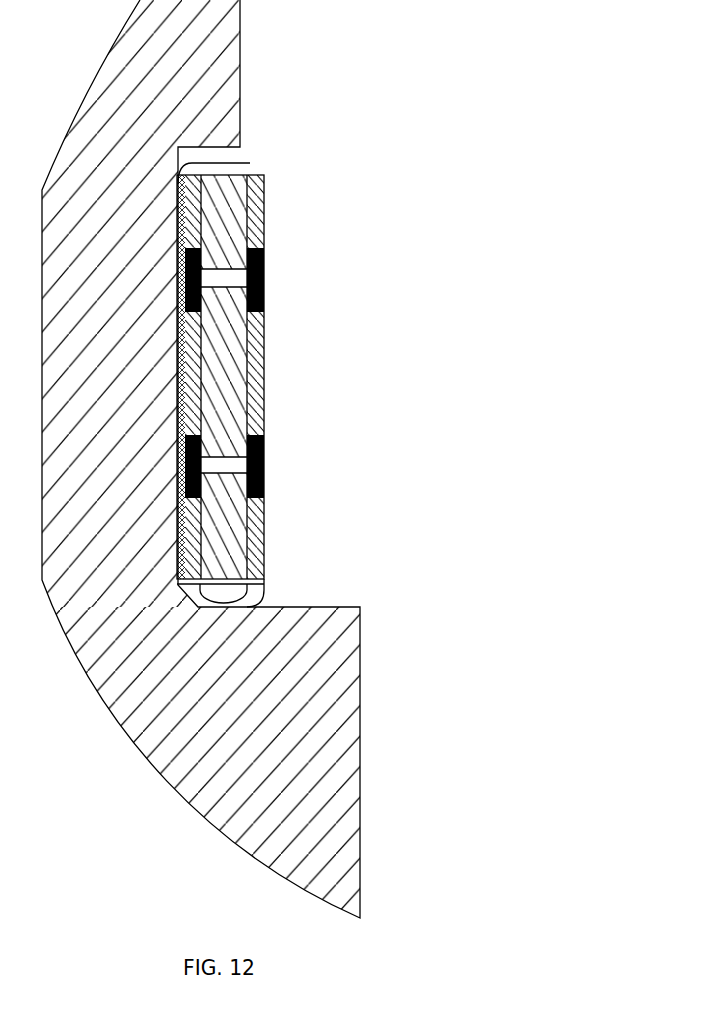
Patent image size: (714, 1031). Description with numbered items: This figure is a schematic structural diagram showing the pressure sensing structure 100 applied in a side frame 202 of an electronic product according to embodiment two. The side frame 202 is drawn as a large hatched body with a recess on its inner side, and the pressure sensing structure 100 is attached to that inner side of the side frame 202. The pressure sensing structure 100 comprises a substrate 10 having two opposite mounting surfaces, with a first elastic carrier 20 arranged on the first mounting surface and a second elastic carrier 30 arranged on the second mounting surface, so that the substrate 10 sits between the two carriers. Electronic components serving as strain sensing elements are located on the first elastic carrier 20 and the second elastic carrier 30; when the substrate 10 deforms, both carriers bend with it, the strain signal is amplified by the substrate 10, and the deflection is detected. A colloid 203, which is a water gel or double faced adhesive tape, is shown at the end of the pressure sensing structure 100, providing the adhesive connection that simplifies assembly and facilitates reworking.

The side frame 202 is at (212, 65).
The colloid 203 is at (250, 163).
The pressure sensing structure 100 is at (281, 390).
The substrate 10 is at (232, 225).
The first elastic carrier 20 is at (183, 216).
The second elastic carrier 30 is at (263, 242).